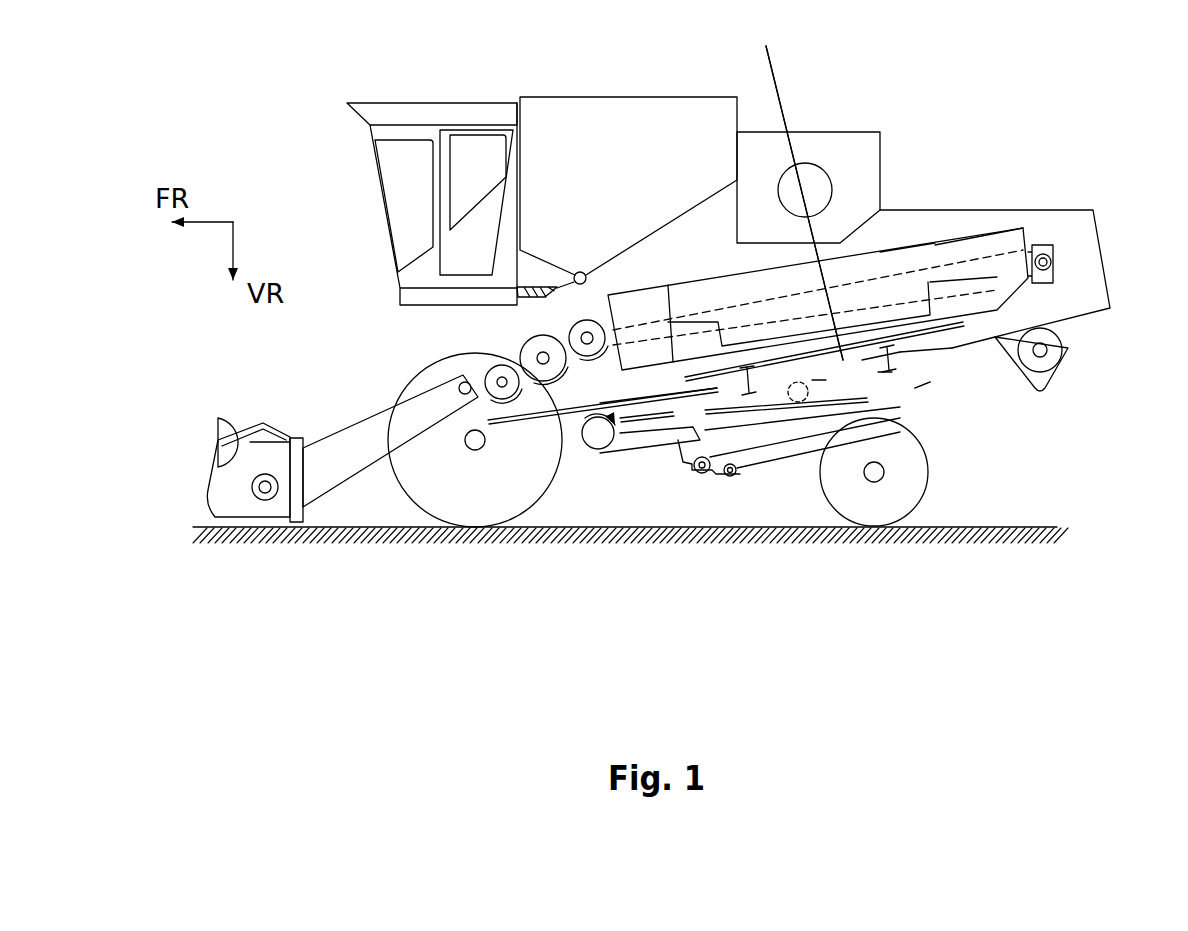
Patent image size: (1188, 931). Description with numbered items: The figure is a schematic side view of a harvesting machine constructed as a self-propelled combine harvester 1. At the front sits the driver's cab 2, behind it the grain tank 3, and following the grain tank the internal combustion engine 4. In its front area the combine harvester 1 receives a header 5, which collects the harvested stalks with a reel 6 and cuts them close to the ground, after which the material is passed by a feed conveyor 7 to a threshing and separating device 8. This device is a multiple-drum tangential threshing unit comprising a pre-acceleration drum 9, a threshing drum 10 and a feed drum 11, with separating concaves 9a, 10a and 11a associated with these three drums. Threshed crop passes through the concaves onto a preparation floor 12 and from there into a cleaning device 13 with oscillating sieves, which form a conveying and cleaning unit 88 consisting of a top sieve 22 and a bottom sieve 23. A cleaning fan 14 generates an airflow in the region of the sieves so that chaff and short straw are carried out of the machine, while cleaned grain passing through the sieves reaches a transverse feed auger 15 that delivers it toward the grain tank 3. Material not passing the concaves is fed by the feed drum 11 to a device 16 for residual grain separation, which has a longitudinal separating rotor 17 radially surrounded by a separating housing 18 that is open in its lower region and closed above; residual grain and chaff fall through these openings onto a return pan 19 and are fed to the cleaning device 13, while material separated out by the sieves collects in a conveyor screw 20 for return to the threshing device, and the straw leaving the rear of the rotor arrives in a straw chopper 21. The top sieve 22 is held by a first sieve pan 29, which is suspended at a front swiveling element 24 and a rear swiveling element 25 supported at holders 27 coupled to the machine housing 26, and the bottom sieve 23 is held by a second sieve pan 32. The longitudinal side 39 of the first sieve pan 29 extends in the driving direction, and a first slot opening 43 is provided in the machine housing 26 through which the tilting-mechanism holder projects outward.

The self-propelled combine harvester 1 is at (1085, 145).
The driver's cab 2 is at (433, 195).
The grain tank 3 is at (610, 128).
The internal combustion engine 4 is at (805, 143).
The header 5 is at (257, 462).
The reel 6 is at (225, 428).
The feed conveyor 7 is at (328, 450).
The threshing and separating device 8 is at (496, 325).
The pre-acceleration drum 9 is at (475, 305).
The separating concave 9a is at (493, 397).
The threshing drum 10 is at (545, 332).
The separating concave 10a is at (565, 385).
The feed drum 11 is at (590, 318).
The separating concave 11a is at (600, 362).
The preparation floor 12 is at (530, 402).
The cleaning device 13 is at (837, 407).
The cleaning fan 14 is at (597, 450).
The transverse feed auger 15 is at (706, 475).
The device for residual grain separation 16 is at (888, 230).
The separating rotor 17 is at (950, 250).
The separating housing 18 is at (932, 240).
The return pan 19 is at (963, 326).
The conveyor screw 20 is at (736, 478).
The straw chopper 21 is at (1068, 348).
The top sieve 22 is at (917, 392).
The bottom sieve 23 is at (882, 402).
The front swiveling element 24 is at (778, 386).
The rear swiveling element 25 is at (878, 357).
The machine housing 26 is at (743, 362).
The holder 27 is at (718, 375).
The first sieve pan 29 is at (759, 192).
The second sieve pan 32 is at (880, 375).
The longitudinal side 39 is at (804, 203).
The first slot opening 43 is at (818, 380).
The conveying and cleaning unit 88 is at (922, 385).